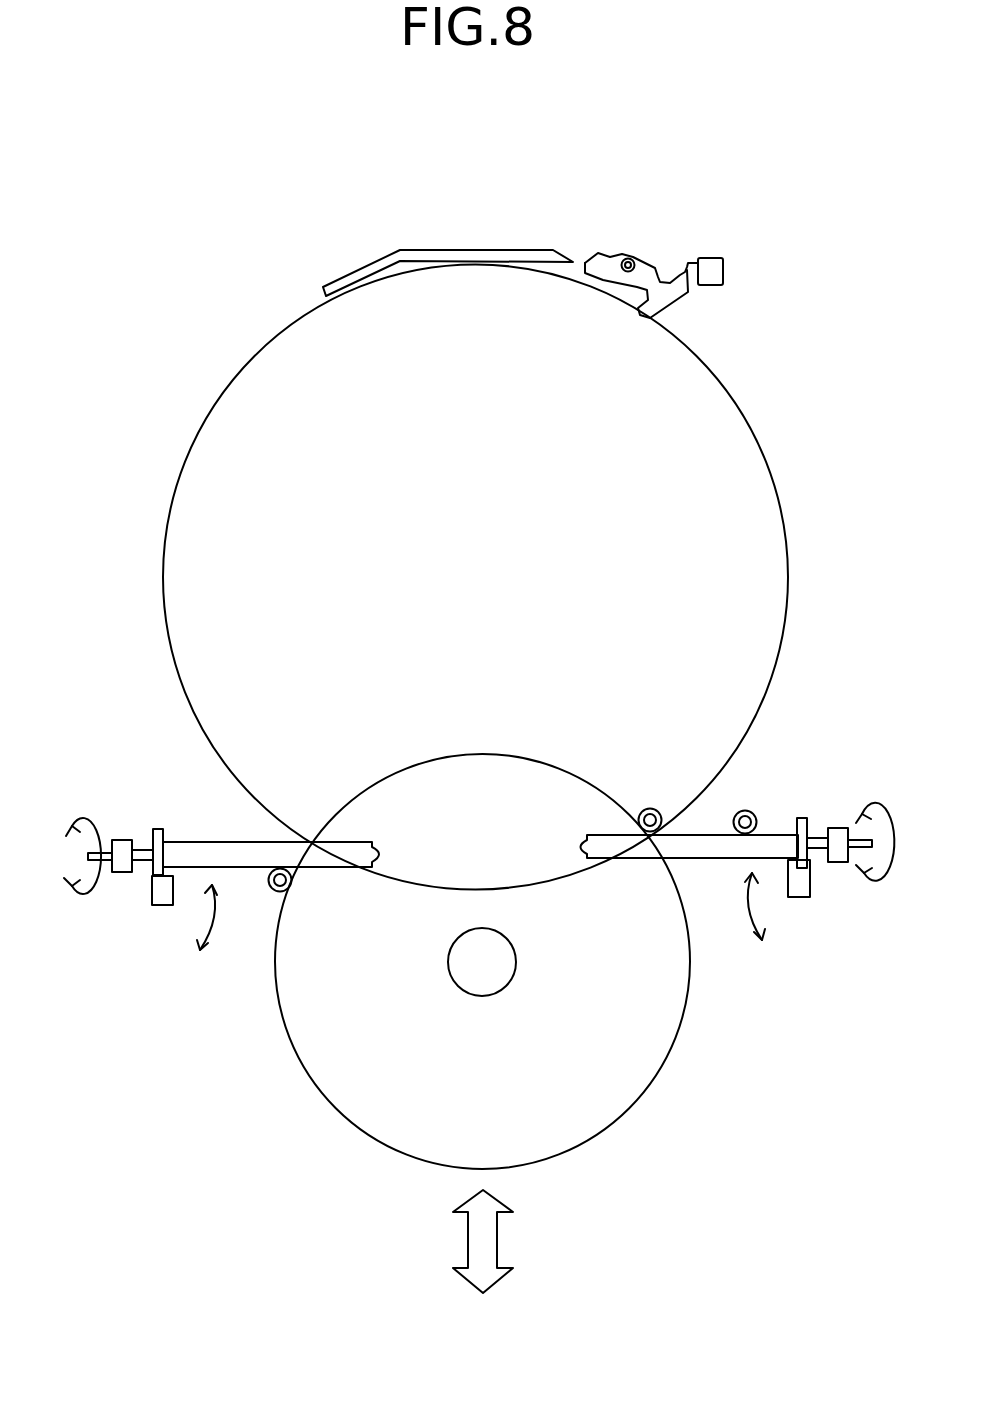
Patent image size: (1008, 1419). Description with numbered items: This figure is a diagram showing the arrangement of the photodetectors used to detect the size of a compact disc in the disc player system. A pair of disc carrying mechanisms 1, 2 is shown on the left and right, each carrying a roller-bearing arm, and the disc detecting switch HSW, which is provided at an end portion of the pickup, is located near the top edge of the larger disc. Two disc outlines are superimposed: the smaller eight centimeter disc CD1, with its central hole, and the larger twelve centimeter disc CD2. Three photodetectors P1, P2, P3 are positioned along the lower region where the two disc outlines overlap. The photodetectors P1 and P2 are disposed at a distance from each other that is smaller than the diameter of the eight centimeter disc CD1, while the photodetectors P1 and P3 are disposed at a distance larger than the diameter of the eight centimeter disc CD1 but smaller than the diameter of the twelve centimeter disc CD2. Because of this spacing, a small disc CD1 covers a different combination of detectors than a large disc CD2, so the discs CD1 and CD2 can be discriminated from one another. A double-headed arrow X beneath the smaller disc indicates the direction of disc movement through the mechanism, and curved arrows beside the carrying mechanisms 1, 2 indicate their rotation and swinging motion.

The disc carrying mechanism 1 is at (208, 835).
The disc carrying mechanism 2 is at (783, 817).
The photodetector P1 is at (275, 892).
The photodetector P2 is at (652, 807).
The photodetector P3 is at (752, 809).
The 8 cm disc CD1 is at (638, 1092).
The 12 cm disc CD2 is at (717, 388).
The disc detecting switch HSW is at (652, 268).
The disc movement direction X is at (495, 1245).